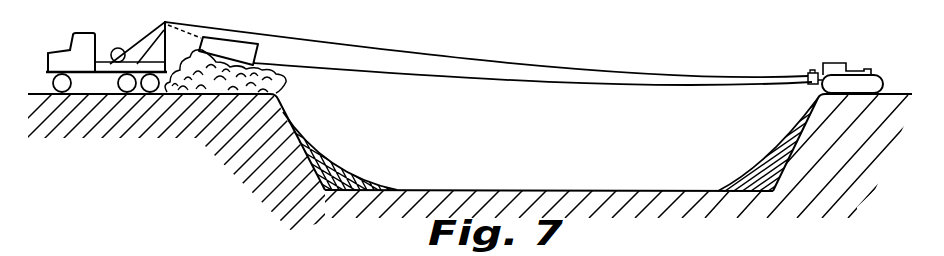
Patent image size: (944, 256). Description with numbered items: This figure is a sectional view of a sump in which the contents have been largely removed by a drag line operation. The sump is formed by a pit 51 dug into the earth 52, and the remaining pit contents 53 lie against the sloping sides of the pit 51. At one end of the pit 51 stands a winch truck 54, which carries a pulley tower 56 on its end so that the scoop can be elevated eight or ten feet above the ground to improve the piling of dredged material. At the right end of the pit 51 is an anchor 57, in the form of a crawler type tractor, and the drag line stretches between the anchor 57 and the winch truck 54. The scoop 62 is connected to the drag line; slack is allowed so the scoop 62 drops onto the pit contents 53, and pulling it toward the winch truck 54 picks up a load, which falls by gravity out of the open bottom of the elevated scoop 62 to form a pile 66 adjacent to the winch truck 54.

The pit 51 is at (470, 188).
The earth 52 is at (205, 141).
The pit contents 53 is at (341, 158).
The winch truck 54 is at (88, 32).
The pulley tower 56 is at (165, 20).
The anchor 57 is at (840, 64).
The scoop 62 is at (249, 50).
The pile 66 is at (287, 80).